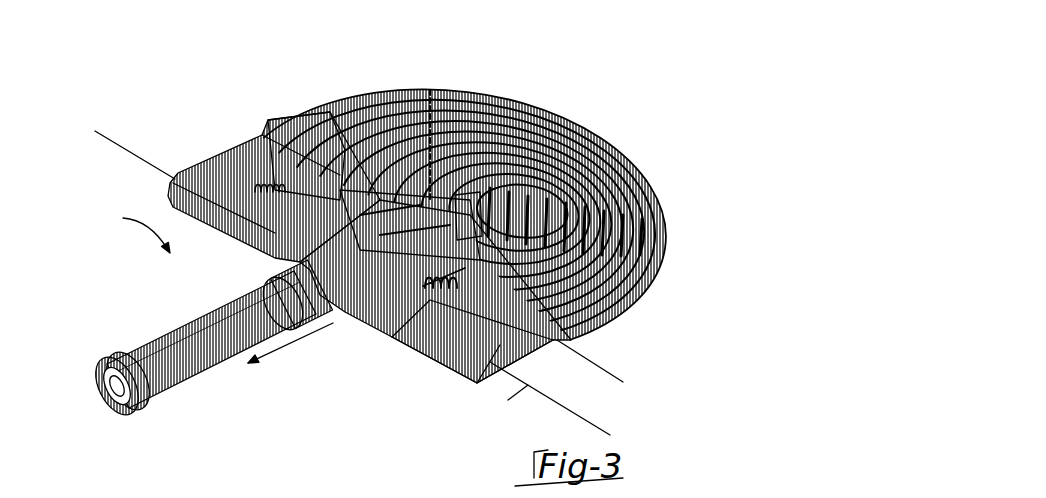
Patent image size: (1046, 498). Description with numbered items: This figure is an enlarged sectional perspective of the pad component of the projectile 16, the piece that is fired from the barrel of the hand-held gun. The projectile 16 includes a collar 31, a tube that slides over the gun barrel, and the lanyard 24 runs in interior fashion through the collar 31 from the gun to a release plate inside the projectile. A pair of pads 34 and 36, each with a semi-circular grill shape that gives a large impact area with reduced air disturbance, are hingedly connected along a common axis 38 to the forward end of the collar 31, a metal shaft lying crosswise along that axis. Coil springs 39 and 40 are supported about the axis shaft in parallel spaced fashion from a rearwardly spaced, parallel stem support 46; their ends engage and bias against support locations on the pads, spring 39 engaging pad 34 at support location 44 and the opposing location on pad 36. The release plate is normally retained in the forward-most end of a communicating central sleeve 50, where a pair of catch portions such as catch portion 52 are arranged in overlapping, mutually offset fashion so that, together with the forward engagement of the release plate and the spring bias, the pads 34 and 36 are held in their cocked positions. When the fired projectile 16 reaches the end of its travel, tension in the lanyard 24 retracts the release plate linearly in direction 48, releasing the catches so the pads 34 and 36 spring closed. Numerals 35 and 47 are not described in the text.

The projectile 16 is at (119, 219).
The lanyard 24 is at (97, 393).
The collar 31 is at (220, 363).
The pad 34 is at (443, 107).
The base bottom surface 35 is at (500, 340).
The pad 36 is at (663, 260).
The common axis 38 is at (626, 340).
The coil spring 39 is at (447, 250).
The coil spring 40 is at (200, 127).
The support location 44 is at (467, 213).
The stem support 46 is at (388, 312).
The support upright 47 is at (378, 211).
The direction 48 is at (297, 342).
The central sleeve 50 is at (270, 265).
The catch portion 52 is at (375, 208).